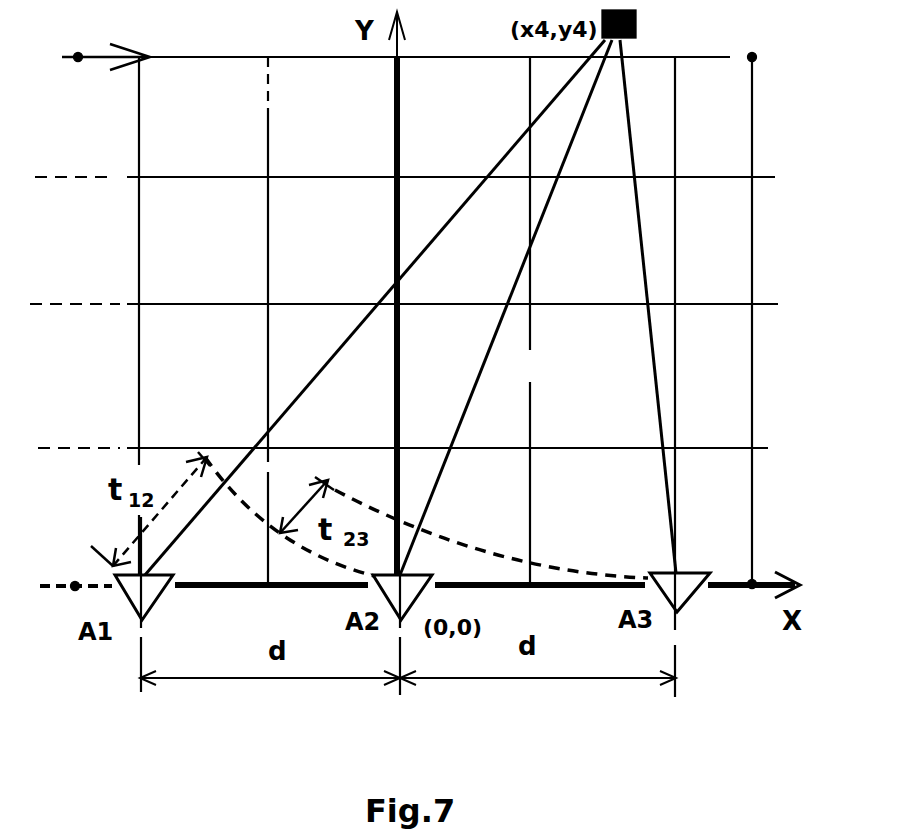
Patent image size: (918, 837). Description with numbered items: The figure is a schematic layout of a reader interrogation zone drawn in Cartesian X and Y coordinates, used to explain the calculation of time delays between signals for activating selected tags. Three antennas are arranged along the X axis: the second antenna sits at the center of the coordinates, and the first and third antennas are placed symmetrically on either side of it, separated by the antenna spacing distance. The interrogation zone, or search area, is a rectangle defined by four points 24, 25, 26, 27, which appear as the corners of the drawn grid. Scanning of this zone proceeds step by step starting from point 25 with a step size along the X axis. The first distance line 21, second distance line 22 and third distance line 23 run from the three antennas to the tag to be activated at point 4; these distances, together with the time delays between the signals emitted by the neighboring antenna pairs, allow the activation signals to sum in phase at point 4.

The point 4 is at (638, 27).
The distance R1 from object to antenna A1 21 is at (375, 307).
The distance R2 from object to antenna A2 22 is at (506, 307).
The distance R3 from object to antenna A3 23 is at (636, 306).
The point 24 is at (60, 569).
The point 25 is at (91, 58).
The point 26 is at (756, 57).
The point 27 is at (753, 604).